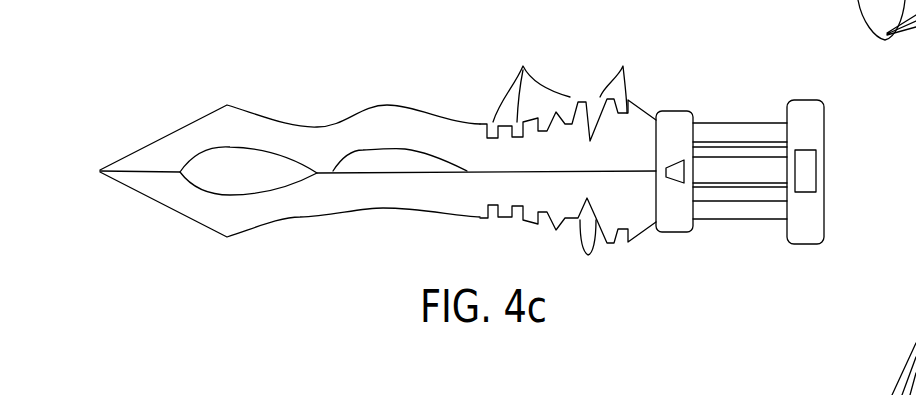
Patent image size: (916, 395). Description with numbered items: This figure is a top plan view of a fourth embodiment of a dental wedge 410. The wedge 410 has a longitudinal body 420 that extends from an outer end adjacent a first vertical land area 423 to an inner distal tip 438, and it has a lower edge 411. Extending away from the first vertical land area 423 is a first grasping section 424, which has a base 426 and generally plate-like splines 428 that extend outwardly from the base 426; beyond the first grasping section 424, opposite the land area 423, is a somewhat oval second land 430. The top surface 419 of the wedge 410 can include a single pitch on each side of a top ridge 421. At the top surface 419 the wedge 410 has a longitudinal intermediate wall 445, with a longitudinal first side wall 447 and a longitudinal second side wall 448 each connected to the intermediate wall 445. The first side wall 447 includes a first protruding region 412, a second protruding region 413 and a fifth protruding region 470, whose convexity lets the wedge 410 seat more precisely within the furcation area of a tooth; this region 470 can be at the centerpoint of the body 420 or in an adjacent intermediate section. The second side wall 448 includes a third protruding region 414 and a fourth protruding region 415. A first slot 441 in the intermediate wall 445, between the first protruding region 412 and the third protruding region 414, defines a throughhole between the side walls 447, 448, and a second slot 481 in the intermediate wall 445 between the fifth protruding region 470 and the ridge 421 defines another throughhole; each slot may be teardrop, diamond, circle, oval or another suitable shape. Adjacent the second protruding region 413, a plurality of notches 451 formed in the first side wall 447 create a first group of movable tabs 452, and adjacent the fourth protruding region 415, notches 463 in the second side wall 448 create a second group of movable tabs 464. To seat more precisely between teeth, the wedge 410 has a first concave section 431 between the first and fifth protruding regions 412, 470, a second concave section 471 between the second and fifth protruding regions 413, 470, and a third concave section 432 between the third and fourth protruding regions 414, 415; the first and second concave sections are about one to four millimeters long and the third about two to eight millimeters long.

The dental wedge 410 is at (322, 78).
The lower edge 411 is at (143, 196).
The first protruding region 412 is at (221, 98).
The second protruding region 413 is at (568, 50).
The third protruding region 414 is at (221, 245).
The fourth protruding region 415 is at (593, 272).
The top surface 419 is at (413, 137).
The longitudinal body 420 is at (262, 207).
The top ridge 421 is at (340, 150).
The first vertical land area 423 is at (673, 128).
The first grasping section 424 is at (721, 248).
The base 426 is at (723, 150).
The splines 428 is at (765, 207).
The second land 430 is at (803, 222).
The first concave section 431 is at (314, 119).
The third concave section 432 is at (390, 210).
The inner distal tip 438 is at (105, 173).
The first slot 441 is at (222, 173).
The longitudinal intermediate wall 445 is at (353, 187).
The longitudinal first side wall 447 is at (252, 135).
The longitudinal second side wall 448 is at (313, 197).
The notches 451 is at (523, 68).
The first group of movable tabs 452 is at (553, 128).
The notches 463 is at (572, 242).
The second group of movable tabs 464 is at (553, 210).
The fifth protruding region 470 is at (413, 99).
The second concave section 471 is at (472, 118).
The second slot 481 is at (383, 157).